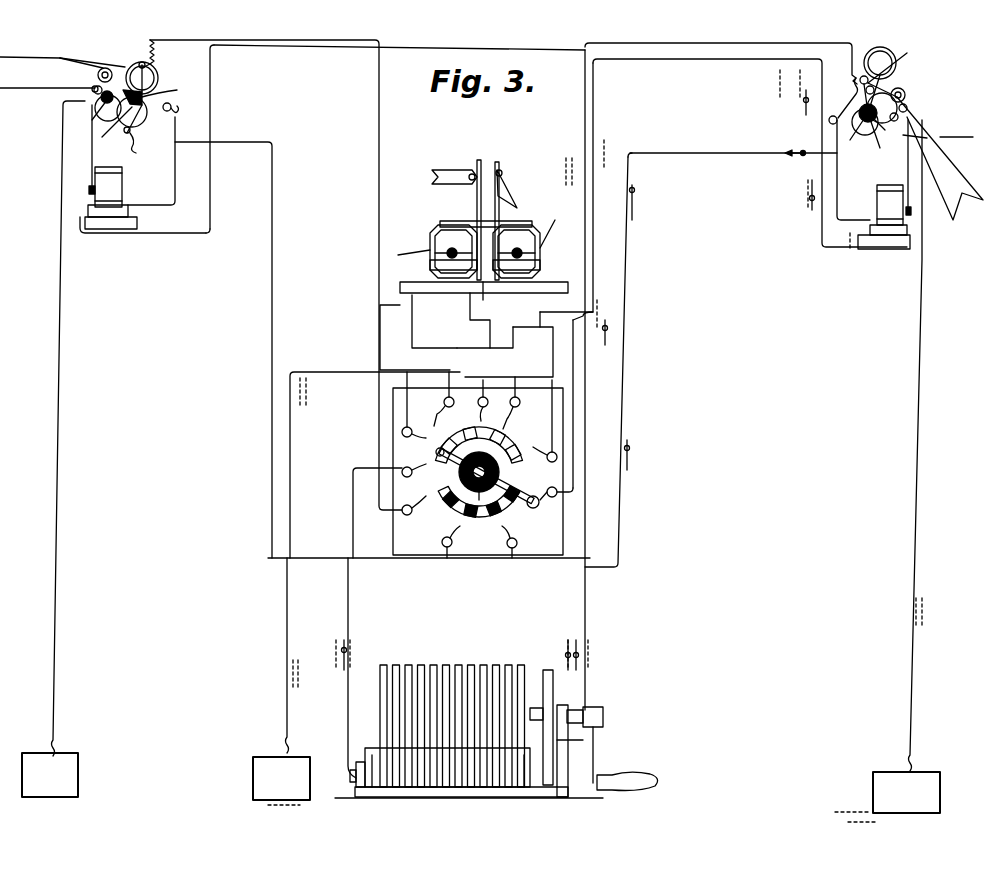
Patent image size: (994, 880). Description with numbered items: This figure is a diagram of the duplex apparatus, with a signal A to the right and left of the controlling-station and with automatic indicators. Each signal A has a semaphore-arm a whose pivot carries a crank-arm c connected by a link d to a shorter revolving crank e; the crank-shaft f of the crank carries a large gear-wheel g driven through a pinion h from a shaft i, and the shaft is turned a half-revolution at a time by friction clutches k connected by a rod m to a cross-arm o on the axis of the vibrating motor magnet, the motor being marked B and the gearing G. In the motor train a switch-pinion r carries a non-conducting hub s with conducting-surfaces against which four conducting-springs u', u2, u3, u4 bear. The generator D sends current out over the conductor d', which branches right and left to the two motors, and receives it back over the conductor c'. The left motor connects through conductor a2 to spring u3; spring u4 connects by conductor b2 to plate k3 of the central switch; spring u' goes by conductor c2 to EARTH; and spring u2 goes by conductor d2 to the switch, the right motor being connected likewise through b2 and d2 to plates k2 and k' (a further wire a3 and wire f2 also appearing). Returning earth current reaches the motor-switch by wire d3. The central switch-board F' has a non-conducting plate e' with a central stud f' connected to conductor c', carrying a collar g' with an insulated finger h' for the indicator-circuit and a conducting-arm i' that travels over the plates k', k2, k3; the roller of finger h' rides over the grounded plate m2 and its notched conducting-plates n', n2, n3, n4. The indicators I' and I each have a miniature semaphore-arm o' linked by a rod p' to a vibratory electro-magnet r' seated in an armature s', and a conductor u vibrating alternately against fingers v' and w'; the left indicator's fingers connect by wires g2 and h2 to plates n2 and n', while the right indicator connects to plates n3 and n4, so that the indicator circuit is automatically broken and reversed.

The signal A is at (75, 53).
The semaphore-arm a is at (80, 70).
The crank-arm c is at (110, 63).
The link d is at (118, 141).
The revolving crank e is at (109, 136).
The crank-shaft f is at (117, 122).
The gear-wheel g is at (140, 135).
The pinion h is at (91, 124).
The shaft i is at (98, 106).
The friction clutch k is at (72, 97).
The rod m is at (84, 149).
The cross-arm o is at (79, 193).
The switch-pinion r is at (142, 119).
The non-conducting hub s is at (141, 79).
The conducting-spring u' is at (94, 81).
The conducting-spring u2 is at (150, 68).
The conducting-spring u3 is at (181, 105).
The conducting-spring u4 is at (141, 148).
The gear G is at (152, 104).
The motor B is at (111, 198).
The conductor a2 is at (160, 161).
The wire a3 is at (846, 149).
The conductor c2 is at (69, 428).
The conductor d' is at (493, 377).
The conductor d2 is at (503, 266).
The wire d3 is at (924, 445).
The wire f2 is at (516, 342).
The conductor b2 is at (527, 364).
The indicator I' is at (441, 251).
The indicator I is at (528, 251).
The vibratory electro-magnet r' is at (484, 260).
The conducting-finger w' is at (484, 275).
The armature s' is at (496, 232).
The conductor u is at (476, 235).
The rod p' is at (486, 220).
The miniature semaphore-arm o' is at (482, 181).
The conducting-finger v' is at (486, 275).
The wire h2 is at (470, 336).
The wire g2 is at (495, 321).
The switch F' is at (478, 484).
The conducting-stud f' is at (479, 479).
The conducting-finger h' is at (479, 445).
The non-conducting collar g' is at (479, 481).
The conducting-arm i' is at (487, 478).
The conducting-plate n3 is at (439, 399).
The conducting-plate n2 is at (491, 400).
The insulated plate m2 is at (472, 406).
The conducting-plate n4 is at (412, 460).
The conducting-plate n' is at (541, 446).
The non-conducting board e' is at (483, 461).
The metallic plate k' is at (550, 485).
The metallic plate k2 is at (484, 532).
The metallic plate k3 is at (458, 522).
The generator D is at (470, 657).
The earth connection EARTH is at (481, 685).